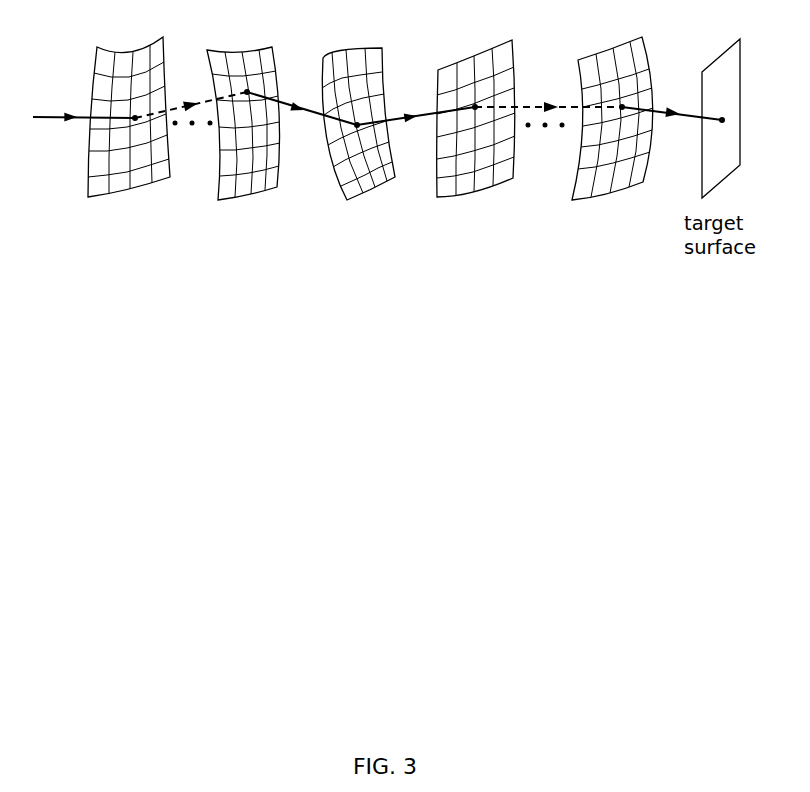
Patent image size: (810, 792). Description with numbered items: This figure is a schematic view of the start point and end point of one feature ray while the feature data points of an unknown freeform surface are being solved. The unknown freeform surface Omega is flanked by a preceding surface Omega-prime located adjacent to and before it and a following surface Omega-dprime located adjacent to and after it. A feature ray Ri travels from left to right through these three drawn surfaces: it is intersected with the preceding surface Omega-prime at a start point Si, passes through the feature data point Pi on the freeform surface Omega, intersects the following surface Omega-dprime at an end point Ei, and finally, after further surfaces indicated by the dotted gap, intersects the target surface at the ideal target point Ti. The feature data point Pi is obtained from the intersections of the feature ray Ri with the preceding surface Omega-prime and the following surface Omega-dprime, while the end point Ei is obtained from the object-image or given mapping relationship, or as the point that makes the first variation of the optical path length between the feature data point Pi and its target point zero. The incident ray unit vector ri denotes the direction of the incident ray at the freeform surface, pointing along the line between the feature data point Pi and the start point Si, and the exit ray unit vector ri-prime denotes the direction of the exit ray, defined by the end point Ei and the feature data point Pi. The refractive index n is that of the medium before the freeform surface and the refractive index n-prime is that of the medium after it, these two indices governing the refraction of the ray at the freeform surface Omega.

The feature ray Ri is at (84, 105).
The start point Si is at (243, 106).
The feature data point Pi is at (363, 112).
The end point Ei is at (471, 123).
The ideal target point Ti is at (721, 106).
The incident ray unit vector ri is at (302, 115).
The exit ray unit vector ri-prime is at (416, 125).
The refractive index before the freeform surface n is at (292, 52).
The refractive index after the freeform surface n-prime is at (415, 52).
The surface Ω' Omega-prime is at (243, 146).
The surface Ω Omega is at (358, 147).
The surface Ω" Omega-dprime is at (476, 143).